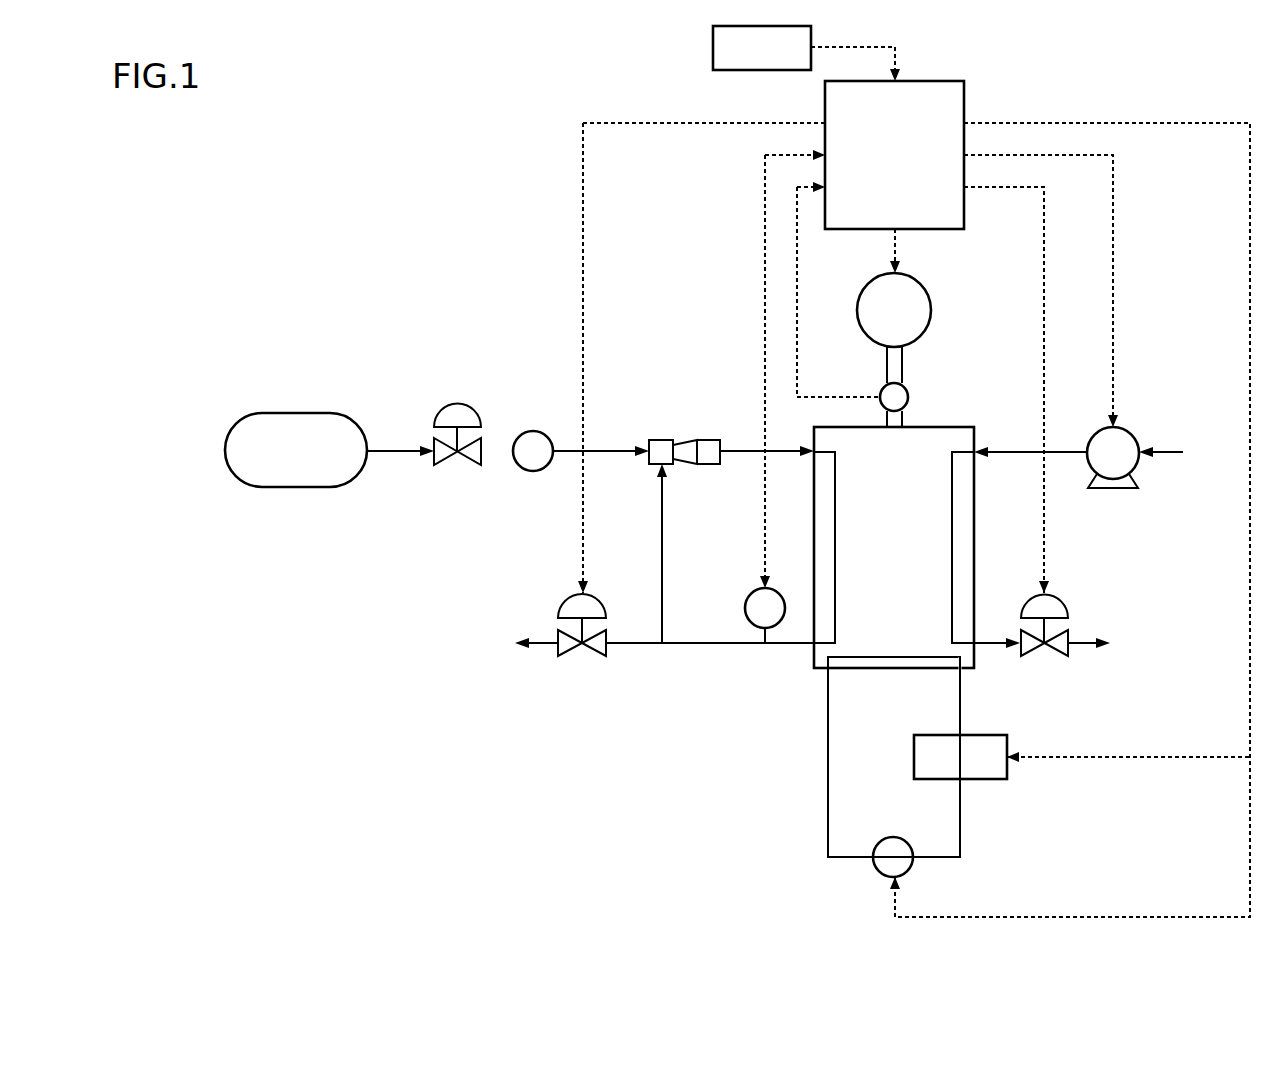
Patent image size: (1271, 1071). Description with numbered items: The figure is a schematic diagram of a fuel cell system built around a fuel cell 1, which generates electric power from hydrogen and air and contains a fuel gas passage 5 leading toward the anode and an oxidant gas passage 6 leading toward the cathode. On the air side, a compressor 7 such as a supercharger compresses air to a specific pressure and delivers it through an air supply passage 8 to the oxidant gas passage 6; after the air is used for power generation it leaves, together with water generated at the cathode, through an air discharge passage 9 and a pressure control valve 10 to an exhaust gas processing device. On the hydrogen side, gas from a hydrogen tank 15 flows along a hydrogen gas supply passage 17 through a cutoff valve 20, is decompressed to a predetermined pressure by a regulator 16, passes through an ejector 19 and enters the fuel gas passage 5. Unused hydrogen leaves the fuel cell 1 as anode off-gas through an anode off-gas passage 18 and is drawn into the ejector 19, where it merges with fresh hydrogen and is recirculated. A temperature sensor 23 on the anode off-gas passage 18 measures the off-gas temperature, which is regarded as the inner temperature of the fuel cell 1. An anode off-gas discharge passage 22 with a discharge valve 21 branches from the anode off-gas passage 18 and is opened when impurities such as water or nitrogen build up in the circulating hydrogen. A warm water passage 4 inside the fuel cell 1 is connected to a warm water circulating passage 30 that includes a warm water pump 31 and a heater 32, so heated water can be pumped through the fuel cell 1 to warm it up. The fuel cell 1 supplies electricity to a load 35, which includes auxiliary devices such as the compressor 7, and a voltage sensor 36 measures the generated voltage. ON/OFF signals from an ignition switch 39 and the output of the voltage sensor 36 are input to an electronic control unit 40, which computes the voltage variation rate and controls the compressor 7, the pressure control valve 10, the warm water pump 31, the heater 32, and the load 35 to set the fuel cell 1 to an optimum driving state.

The fuel cell 1 is at (950, 427).
The warm water passage 4 is at (896, 657).
The fuel gas passage 5 is at (835, 463).
The oxidant gas passage 6 is at (952, 500).
The compressor 7 is at (1111, 490).
The air supply passage 8 is at (1010, 455).
The air discharge passage 9 is at (1000, 641).
The pressure control valve 10 is at (1051, 657).
The hydrogen tank 15 is at (297, 413).
The regulator 16 is at (536, 431).
The hydrogen gas supply passage 17 is at (400, 451).
The anode off-gas passage 18 is at (704, 645).
The ejector 19 is at (665, 440).
The cutoff valve 20 is at (458, 402).
The discharge valve 21 is at (559, 600).
The anode off-gas discharge passage 22 is at (631, 645).
The temperature sensor 23 is at (750, 594).
The warm water circulating passage 30 is at (828, 752).
The warm water pump 31 is at (897, 837).
The heater 32 is at (980, 779).
The load 35 is at (931, 309).
The voltage sensor 36 is at (882, 390).
The ignition switch 39 is at (713, 47).
The electronic control unit 40 is at (947, 81).